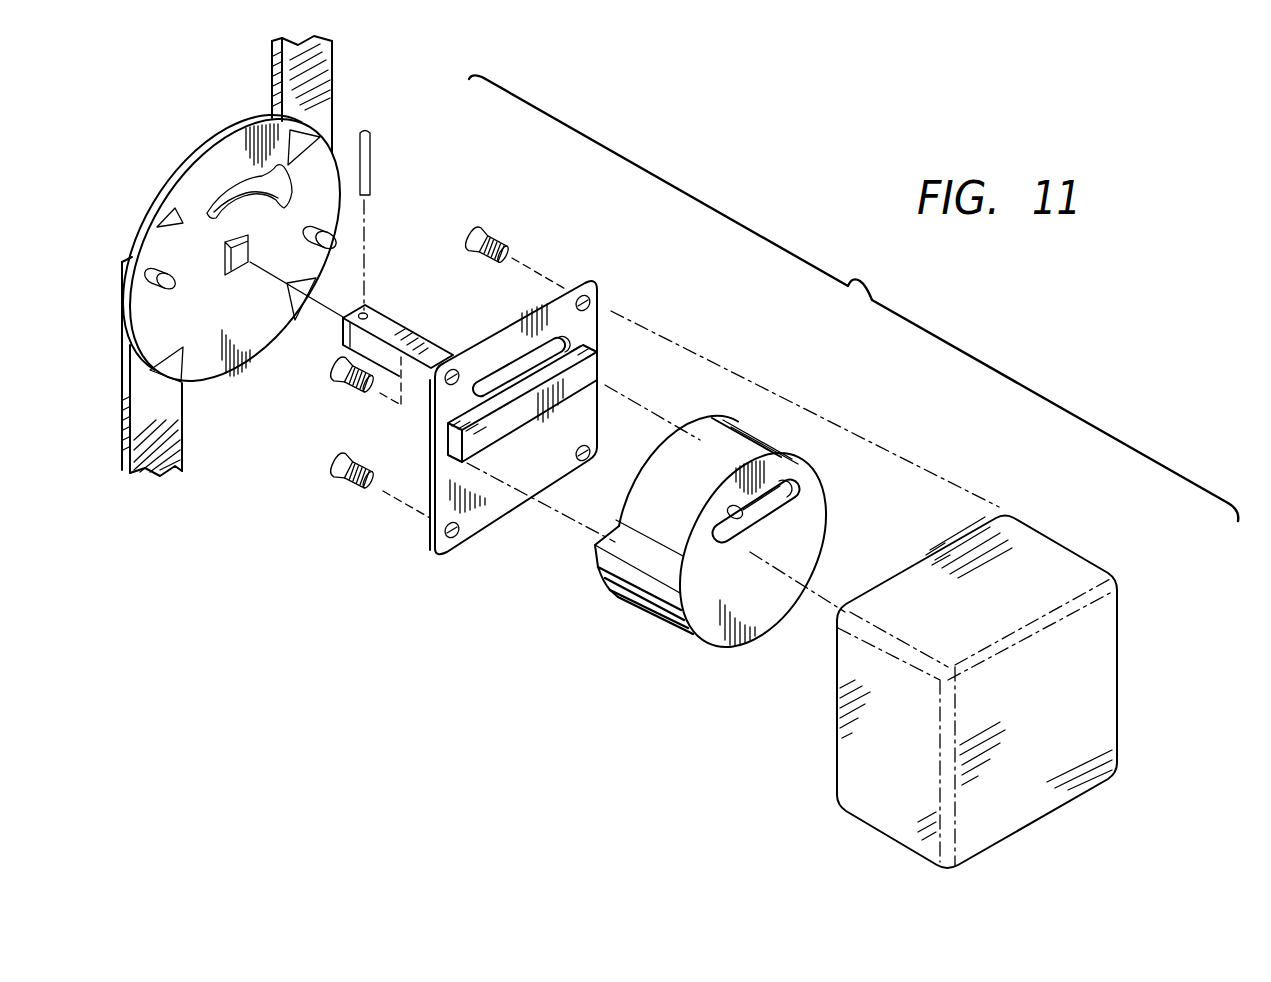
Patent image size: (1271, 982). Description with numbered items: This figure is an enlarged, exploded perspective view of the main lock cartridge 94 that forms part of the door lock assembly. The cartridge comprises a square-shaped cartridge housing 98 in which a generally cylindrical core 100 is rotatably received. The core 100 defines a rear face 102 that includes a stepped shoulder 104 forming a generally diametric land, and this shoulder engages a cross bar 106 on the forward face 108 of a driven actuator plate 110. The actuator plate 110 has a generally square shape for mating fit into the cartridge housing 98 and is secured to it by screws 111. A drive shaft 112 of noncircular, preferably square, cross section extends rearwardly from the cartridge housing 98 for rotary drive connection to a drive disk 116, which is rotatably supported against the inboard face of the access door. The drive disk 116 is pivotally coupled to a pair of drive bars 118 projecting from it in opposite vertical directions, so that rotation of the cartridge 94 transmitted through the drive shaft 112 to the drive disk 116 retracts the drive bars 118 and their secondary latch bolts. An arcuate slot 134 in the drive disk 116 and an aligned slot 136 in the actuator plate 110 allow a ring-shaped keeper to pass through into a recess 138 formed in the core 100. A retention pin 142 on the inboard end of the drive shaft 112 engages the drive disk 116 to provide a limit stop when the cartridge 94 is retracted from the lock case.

The main lock cartridge 94 is at (853, 298).
The cartridge housing 98 is at (1104, 668).
The core 100 is at (707, 632).
The rear face 102 is at (620, 596).
The stepped shoulder 104 is at (606, 544).
The cross bar 106 is at (588, 375).
The forward face 108 is at (470, 517).
The actuator plate 110 is at (555, 434).
The screws 111 is at (492, 246).
The drive shaft 112 is at (390, 327).
The drive disk 116 is at (220, 365).
The drive bars 118 is at (322, 60).
The arcuate slot 134 is at (212, 203).
The slot 136 is at (567, 354).
The recess 138 is at (794, 508).
The retention pin 142 is at (372, 164).